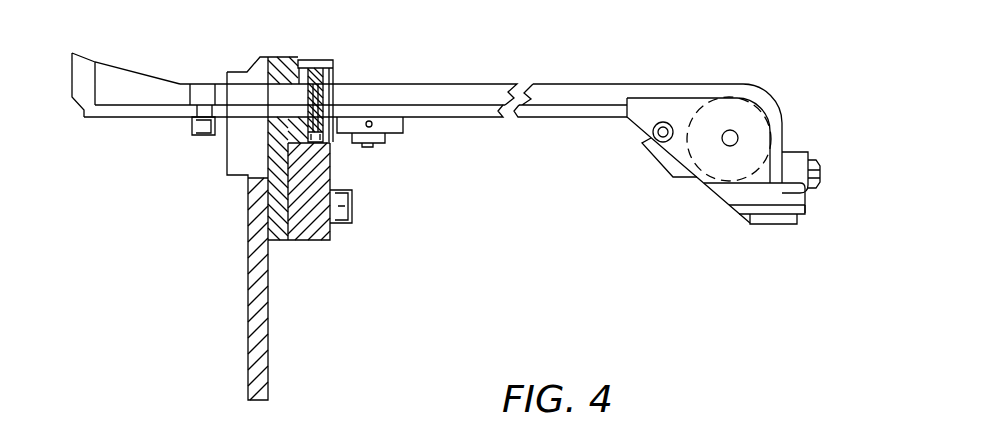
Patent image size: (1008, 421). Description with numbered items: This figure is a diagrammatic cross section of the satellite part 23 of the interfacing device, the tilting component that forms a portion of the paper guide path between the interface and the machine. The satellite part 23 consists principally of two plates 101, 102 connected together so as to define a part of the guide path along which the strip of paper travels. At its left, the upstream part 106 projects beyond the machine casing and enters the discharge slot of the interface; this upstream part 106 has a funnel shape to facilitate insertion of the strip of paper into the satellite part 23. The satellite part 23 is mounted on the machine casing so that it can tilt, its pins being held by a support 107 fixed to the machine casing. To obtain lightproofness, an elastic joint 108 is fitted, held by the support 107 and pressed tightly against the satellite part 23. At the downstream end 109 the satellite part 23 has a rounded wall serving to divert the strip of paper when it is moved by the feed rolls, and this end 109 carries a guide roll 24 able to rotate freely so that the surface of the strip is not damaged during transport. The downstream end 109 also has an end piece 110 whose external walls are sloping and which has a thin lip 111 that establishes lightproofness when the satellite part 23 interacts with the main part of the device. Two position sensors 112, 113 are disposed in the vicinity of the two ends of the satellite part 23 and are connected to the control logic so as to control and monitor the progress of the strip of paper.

The satellite part 23 is at (487, 197).
The guide roll 24 is at (697, 175).
The plate 101 is at (580, 83).
The plate 102 is at (580, 119).
The upstream part 106 is at (128, 77).
The support 107 is at (317, 241).
The elastic joint 108 is at (298, 62).
The downstream end 109 is at (773, 107).
The end piece 110 is at (806, 210).
The thin lip 111 is at (750, 225).
The position sensor 112 is at (833, 170).
The position sensor 113 is at (370, 148).